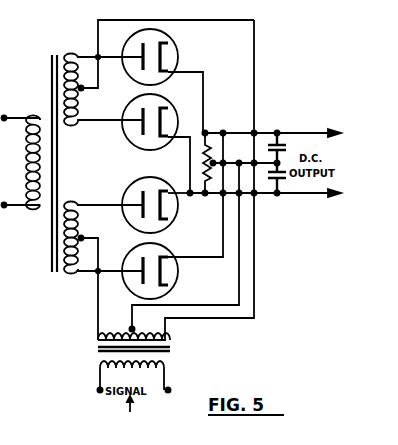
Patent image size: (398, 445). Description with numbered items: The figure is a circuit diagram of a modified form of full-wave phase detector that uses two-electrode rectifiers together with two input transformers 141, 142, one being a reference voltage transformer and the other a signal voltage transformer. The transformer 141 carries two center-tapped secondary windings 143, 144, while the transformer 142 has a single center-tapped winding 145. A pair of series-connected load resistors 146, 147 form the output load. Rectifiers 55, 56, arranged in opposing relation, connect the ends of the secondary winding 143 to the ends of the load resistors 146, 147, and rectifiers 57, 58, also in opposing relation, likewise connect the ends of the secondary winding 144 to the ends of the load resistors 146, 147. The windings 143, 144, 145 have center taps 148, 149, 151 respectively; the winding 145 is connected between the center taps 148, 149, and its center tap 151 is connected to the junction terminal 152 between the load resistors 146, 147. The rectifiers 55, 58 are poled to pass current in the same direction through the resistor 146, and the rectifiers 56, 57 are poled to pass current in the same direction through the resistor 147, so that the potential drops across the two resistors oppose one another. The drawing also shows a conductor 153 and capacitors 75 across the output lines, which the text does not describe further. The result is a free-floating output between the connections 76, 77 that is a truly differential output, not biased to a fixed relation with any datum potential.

The input transformer 141 is at (52, 228).
The center-tapped secondary winding 143 is at (72, 57).
The center tap 148 is at (84, 92).
The center-tapped secondary winding 144 is at (87, 274).
The center tap 149 is at (84, 240).
The rectifier 55 is at (180, 45).
The rectifier 56 is at (164, 97).
The rectifier 57 is at (170, 231).
The rectifier 58 is at (177, 289).
The load resistor 146 is at (209, 131).
The load resistor 147 is at (206, 195).
The junction terminal 152 is at (203, 160).
The feedback conductor 153 is at (241, 285).
The capacitor 75 is at (284, 129).
The connection 76 is at (337, 130).
The connection 77 is at (332, 205).
The center-tapped winding 145 is at (168, 333).
The center tap 151 is at (130, 320).
The input transformer 142 is at (170, 350).